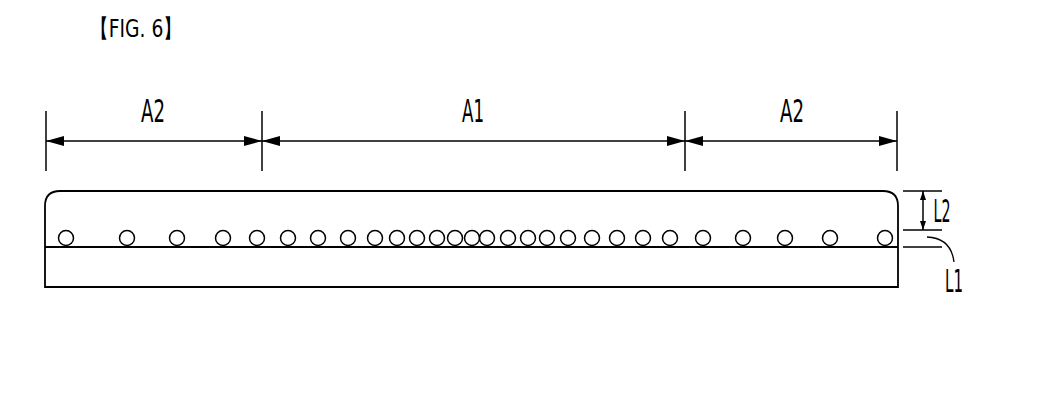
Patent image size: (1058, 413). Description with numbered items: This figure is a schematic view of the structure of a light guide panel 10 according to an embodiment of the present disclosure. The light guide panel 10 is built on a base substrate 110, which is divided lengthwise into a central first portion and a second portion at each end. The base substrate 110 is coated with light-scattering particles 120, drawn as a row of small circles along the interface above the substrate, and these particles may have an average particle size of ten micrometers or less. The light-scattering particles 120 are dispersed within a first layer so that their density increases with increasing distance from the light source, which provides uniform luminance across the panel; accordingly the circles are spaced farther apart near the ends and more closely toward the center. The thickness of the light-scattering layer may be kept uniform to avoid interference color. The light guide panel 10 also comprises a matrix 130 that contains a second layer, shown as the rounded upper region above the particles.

The light guide panel 10 is at (500, 308).
The base substrate 110 is at (222, 268).
The light-scattering particles 120 is at (347, 245).
The matrix 130 is at (724, 218).